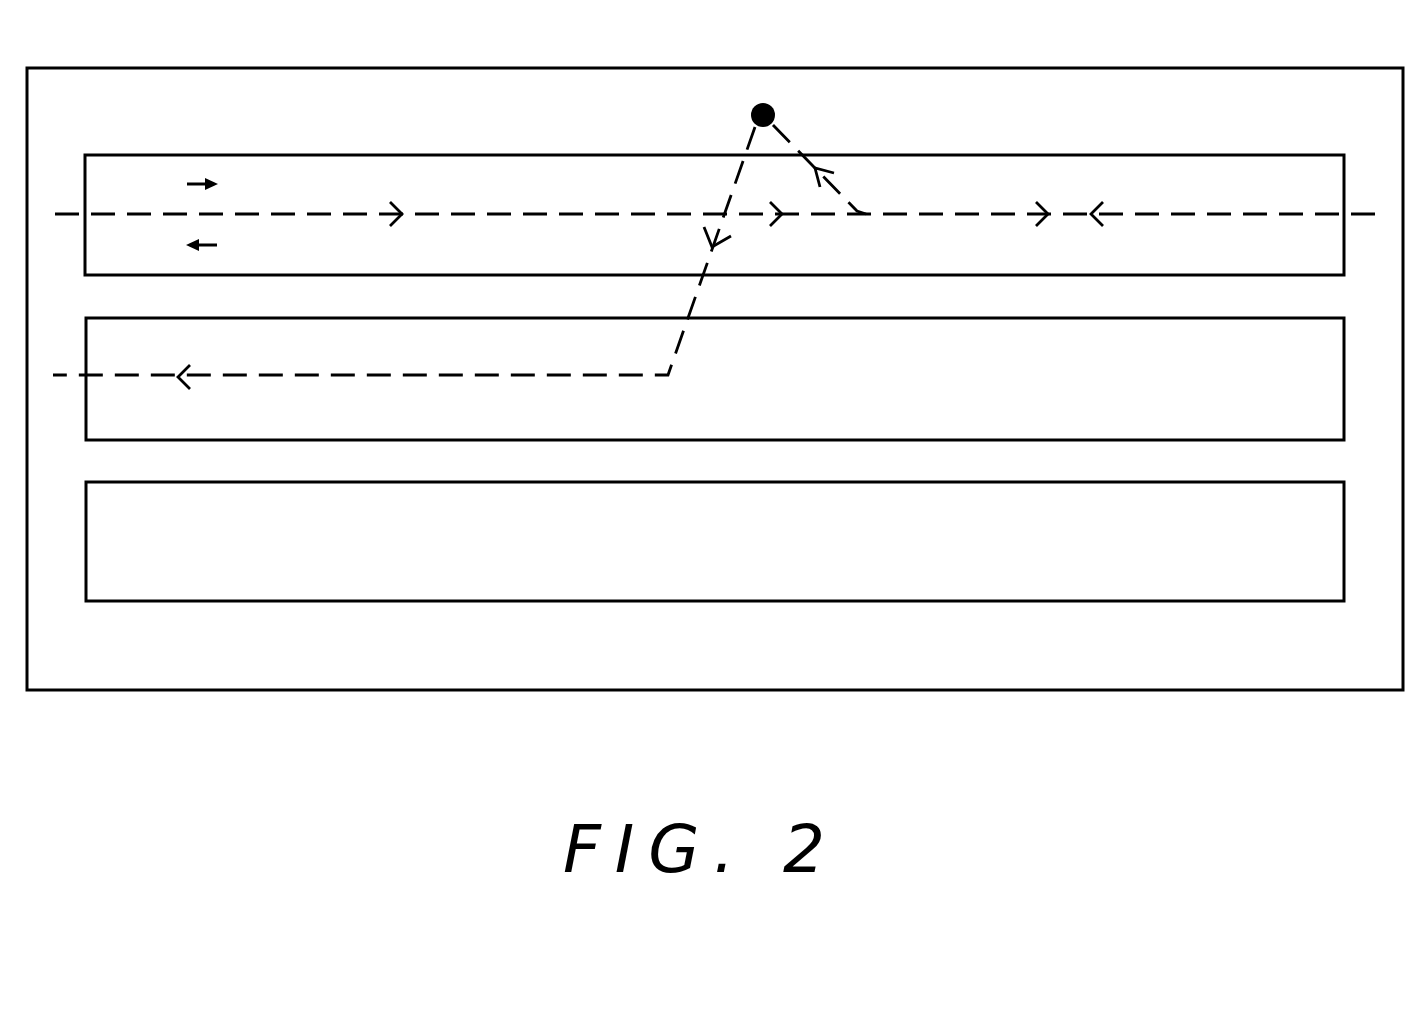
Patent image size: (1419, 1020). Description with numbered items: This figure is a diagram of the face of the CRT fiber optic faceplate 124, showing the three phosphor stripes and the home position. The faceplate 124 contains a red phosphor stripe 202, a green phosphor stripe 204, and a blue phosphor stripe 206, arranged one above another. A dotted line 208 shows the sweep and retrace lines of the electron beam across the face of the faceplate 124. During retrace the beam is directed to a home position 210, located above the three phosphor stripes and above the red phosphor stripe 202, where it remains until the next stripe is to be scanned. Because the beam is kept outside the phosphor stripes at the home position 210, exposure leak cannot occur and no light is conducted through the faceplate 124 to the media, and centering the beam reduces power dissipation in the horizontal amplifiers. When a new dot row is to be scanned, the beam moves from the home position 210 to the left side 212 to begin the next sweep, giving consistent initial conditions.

The fiber optic faceplate 124 is at (1028, 68).
The red phosphor stripe 202 is at (1248, 156).
The green phosphor stripe 204 is at (1248, 320).
The blue phosphor stripe 206 is at (1246, 482).
The dotted line 208 is at (1139, 218).
The home position 210 is at (752, 112).
The left side 212 is at (86, 343).